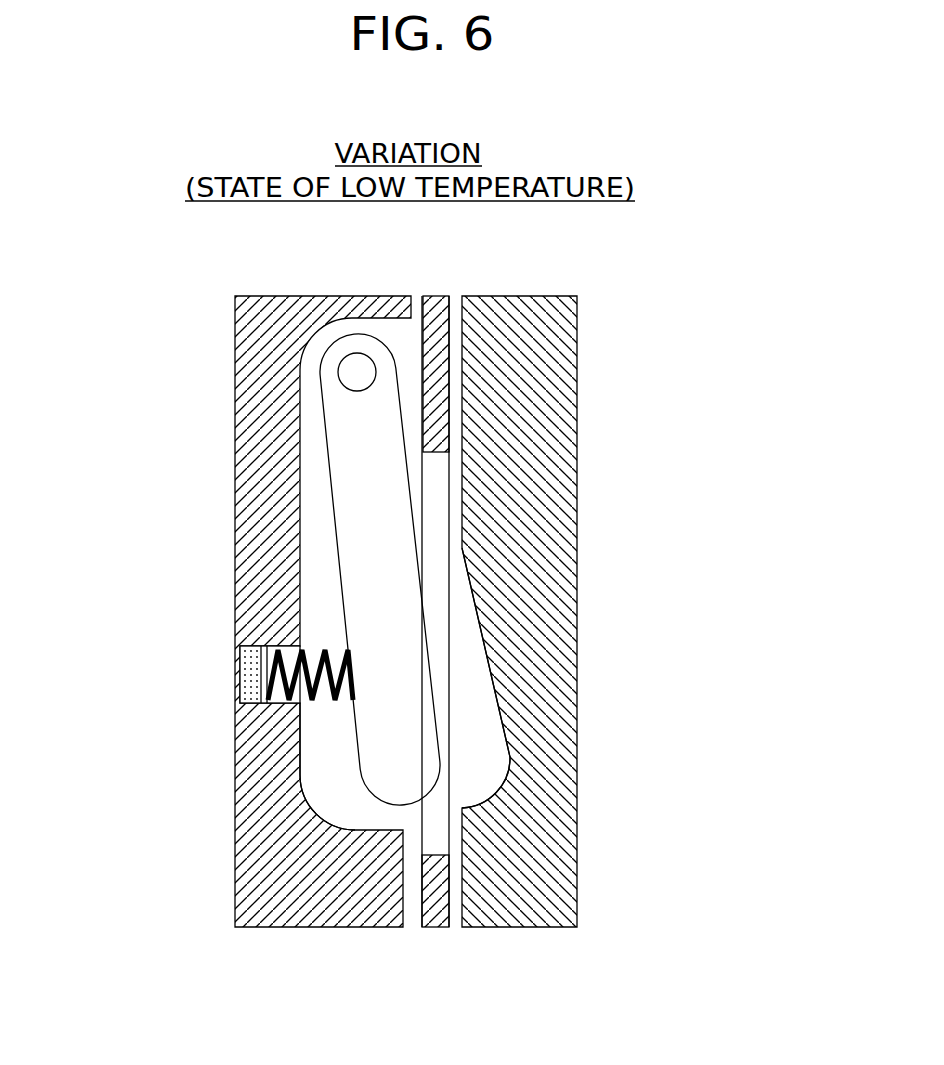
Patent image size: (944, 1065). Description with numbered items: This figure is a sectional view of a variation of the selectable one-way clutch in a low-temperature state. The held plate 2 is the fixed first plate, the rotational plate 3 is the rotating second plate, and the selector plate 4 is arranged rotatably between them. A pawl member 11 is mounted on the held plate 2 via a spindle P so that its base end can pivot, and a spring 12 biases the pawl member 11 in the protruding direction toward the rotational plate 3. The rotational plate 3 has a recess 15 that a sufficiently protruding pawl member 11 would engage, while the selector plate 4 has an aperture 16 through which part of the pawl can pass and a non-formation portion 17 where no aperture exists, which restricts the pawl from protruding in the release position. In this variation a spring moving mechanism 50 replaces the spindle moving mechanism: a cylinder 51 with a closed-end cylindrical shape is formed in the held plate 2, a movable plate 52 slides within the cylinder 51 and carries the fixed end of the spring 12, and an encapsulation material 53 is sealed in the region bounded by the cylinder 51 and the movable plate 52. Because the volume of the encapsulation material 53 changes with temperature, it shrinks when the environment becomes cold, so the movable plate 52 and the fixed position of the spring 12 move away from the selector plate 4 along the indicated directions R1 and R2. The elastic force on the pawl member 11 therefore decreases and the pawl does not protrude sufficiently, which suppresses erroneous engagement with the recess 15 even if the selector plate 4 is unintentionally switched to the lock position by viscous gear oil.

The held plate 2 is at (263, 413).
The rotational plate 3 is at (520, 378).
The selector plate 4 is at (450, 329).
The pawl member 11 is at (392, 513).
The spring 12 is at (310, 705).
The recess 15 is at (470, 693).
The aperture 16 is at (435, 807).
The non-formation portion 17 is at (437, 428).
The spring moving mechanism 50 is at (209, 671).
The cylinder 51 is at (252, 690).
The movable plate 52 is at (262, 657).
The encapsulation material 53 is at (245, 660).
The spindle P is at (366, 370).
The direction R1 is at (628, 824).
The direction R2 is at (628, 847).